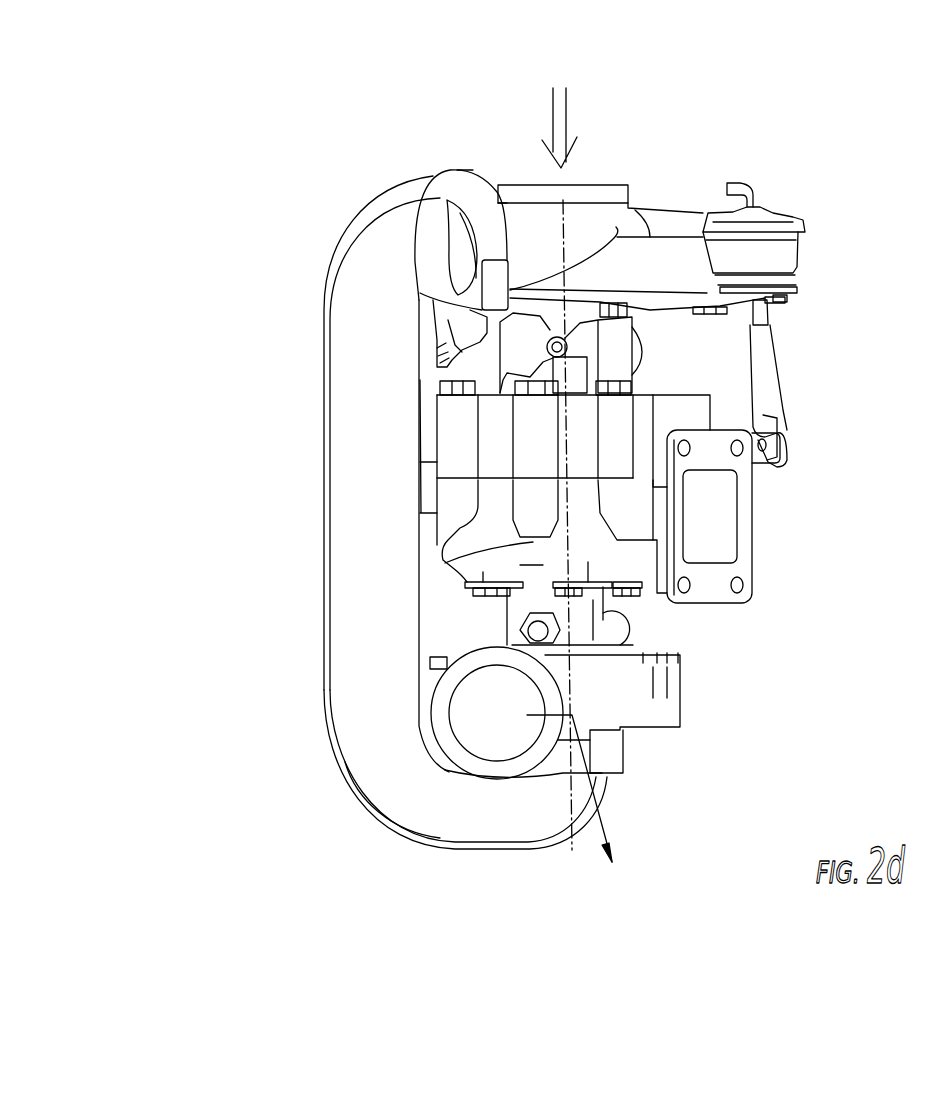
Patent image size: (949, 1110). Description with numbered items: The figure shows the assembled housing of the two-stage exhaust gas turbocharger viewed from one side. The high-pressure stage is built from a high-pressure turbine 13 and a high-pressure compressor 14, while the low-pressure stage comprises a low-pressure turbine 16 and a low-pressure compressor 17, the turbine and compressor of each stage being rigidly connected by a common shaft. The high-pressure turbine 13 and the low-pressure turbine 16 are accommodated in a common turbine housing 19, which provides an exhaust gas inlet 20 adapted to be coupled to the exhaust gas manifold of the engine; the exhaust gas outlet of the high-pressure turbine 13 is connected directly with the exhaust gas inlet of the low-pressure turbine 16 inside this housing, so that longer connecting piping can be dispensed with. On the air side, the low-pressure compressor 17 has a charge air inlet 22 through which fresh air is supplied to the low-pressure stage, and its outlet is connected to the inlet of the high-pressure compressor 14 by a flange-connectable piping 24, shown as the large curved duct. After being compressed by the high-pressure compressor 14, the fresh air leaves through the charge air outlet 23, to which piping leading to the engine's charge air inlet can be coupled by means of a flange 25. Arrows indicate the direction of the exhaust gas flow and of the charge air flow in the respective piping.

The high-pressure turbine 13 is at (533, 542).
The high-pressure compressor 14 is at (650, 718).
The low-pressure turbine 16 is at (513, 433).
The low-pressure compressor 17 is at (598, 248).
The common turbine housing 19 is at (610, 452).
The exhaust gas inlet 20 is at (705, 533).
The charge air inlet 22 is at (559, 112).
The charge air outlet 23 is at (584, 794).
The piping 24 is at (342, 488).
The flange 25 is at (462, 180).